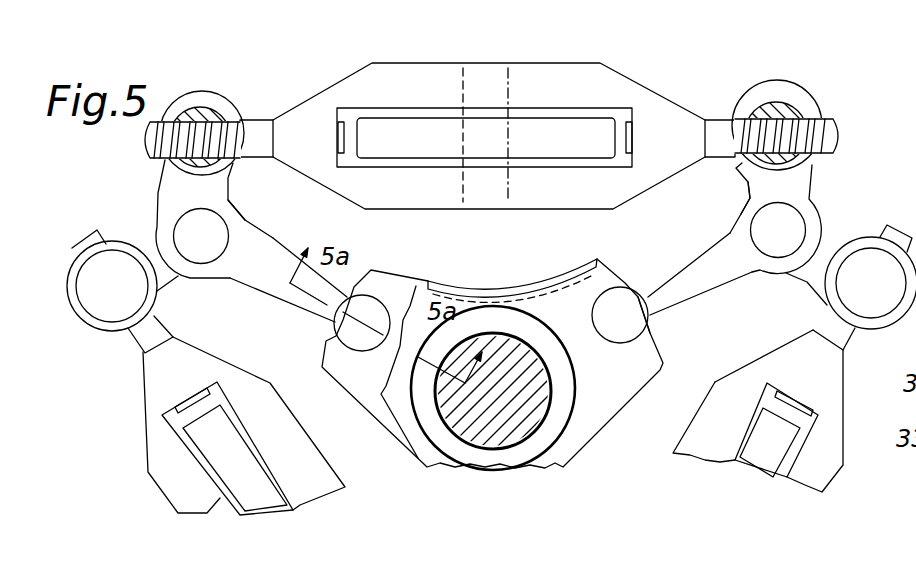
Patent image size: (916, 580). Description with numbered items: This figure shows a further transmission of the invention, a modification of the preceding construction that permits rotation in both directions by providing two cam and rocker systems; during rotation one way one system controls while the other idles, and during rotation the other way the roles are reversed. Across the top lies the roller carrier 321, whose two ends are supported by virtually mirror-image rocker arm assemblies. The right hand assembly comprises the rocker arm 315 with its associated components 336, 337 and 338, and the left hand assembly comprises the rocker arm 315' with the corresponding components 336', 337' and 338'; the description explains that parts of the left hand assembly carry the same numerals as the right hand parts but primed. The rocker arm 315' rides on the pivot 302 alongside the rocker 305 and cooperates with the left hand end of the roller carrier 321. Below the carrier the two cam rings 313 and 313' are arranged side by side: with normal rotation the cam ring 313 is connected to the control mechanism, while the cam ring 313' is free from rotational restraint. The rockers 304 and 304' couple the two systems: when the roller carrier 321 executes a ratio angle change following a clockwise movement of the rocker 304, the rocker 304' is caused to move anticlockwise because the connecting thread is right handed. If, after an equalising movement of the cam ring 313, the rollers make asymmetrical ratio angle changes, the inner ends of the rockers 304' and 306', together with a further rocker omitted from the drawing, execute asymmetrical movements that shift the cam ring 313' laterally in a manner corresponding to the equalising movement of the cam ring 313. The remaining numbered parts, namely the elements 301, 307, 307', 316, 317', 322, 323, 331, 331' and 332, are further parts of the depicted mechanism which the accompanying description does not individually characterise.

The pivot hole 301 is at (790, 222).
The pivot 302 is at (207, 248).
The rocker 304 is at (711, 206).
The rocker 304' is at (262, 199).
The rocker 305 is at (170, 290).
The rocker 306' is at (788, 308).
The arm 307 is at (709, 275).
The arm 307' is at (288, 262).
The cam ring 313 is at (499, 387).
The cam ring 313' is at (428, 350).
The rocker arm 315 is at (811, 209).
The rocker arm 315' is at (186, 219).
The ring member with jaw 316 is at (140, 245).
The ring member with jaw 317' is at (794, 343).
The roller carrier 321 is at (617, 93).
The slot 322 is at (548, 128).
The center line 323 is at (483, 92).
The pin 331 is at (660, 320).
The pin 331' is at (389, 287).
The pin seat 332 is at (647, 300).
The screw boss 336 is at (776, 137).
The screw boss 336' is at (175, 141).
The screw head ring 337 is at (799, 117).
The screw head ring 337' is at (229, 128).
The adjusting screw 338 is at (816, 134).
The adjusting screw 338' is at (160, 142).